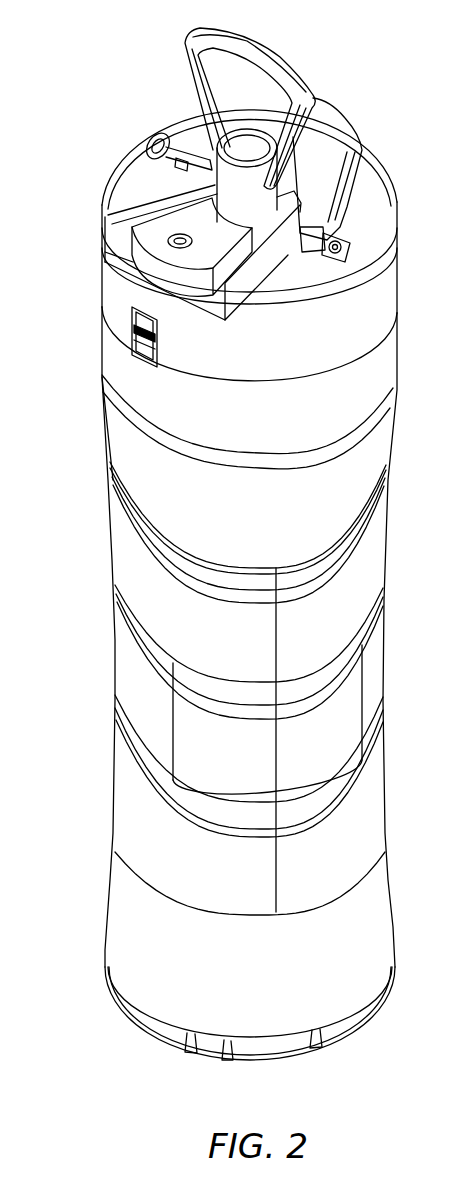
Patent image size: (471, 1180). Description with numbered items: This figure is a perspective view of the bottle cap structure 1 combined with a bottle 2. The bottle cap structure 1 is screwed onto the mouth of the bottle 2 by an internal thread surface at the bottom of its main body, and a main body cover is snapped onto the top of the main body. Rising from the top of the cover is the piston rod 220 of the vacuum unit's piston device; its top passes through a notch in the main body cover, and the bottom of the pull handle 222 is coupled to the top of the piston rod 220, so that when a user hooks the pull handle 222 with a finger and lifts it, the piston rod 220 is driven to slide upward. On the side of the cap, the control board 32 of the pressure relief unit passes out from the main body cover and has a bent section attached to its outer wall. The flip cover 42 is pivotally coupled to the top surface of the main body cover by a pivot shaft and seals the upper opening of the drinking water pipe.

The bottle cap structure 1 is at (377, 288).
The bottle 2 is at (367, 465).
The control board 32 is at (143, 348).
The flip cover 42 is at (333, 137).
The piston rod 220 is at (232, 193).
The pull handle 222 is at (277, 63).